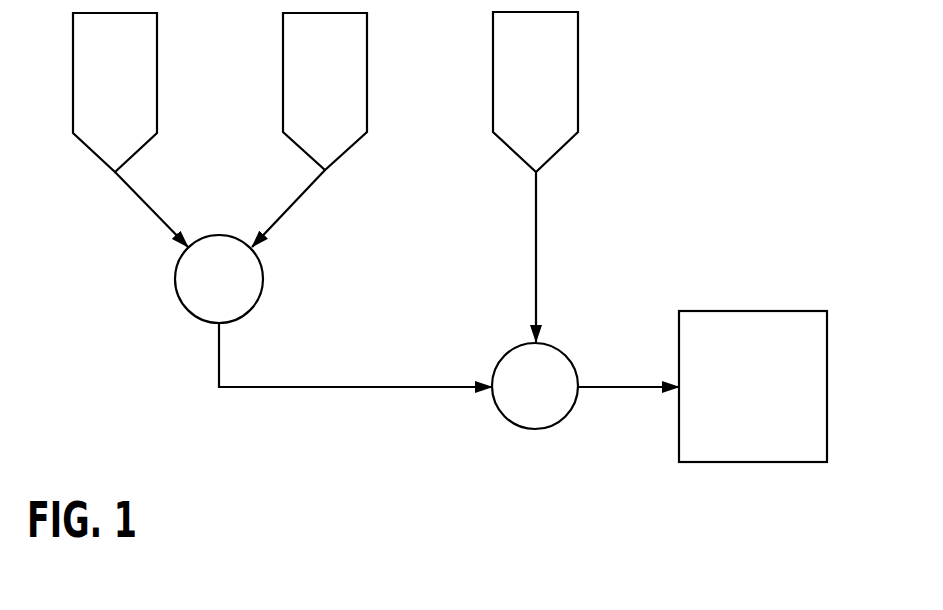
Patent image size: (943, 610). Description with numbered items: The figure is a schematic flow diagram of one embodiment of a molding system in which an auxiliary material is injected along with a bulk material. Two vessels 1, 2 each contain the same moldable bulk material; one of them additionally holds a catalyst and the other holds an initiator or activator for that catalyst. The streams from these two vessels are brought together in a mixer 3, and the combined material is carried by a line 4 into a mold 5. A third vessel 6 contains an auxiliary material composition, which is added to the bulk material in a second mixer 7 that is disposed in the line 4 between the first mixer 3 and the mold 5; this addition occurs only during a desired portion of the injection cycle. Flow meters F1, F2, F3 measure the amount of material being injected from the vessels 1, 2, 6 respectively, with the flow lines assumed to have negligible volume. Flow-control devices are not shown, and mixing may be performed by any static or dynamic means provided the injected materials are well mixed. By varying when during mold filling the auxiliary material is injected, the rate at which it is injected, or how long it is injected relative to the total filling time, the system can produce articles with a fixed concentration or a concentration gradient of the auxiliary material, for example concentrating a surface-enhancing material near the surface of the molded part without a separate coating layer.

The vessel 1 is at (157, 60).
The vessel 2 is at (367, 60).
The mixer 3 is at (217, 233).
The line 4 is at (613, 387).
The mold 5 is at (679, 311).
The vessel 6 is at (578, 70).
The mixer 7 is at (500, 358).
The flow meter F1 is at (142, 205).
The flow meter F2 is at (303, 197).
The flow meter F3 is at (537, 218).